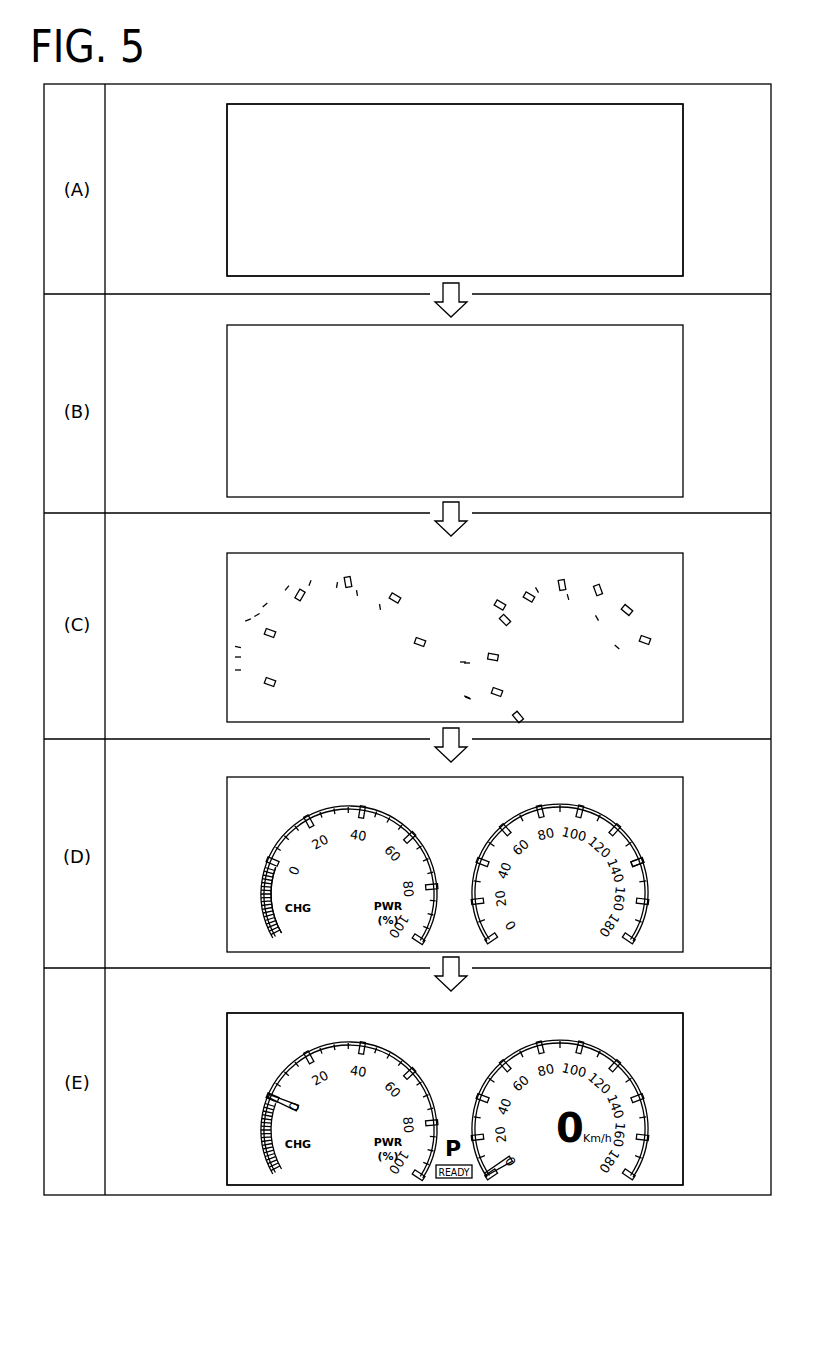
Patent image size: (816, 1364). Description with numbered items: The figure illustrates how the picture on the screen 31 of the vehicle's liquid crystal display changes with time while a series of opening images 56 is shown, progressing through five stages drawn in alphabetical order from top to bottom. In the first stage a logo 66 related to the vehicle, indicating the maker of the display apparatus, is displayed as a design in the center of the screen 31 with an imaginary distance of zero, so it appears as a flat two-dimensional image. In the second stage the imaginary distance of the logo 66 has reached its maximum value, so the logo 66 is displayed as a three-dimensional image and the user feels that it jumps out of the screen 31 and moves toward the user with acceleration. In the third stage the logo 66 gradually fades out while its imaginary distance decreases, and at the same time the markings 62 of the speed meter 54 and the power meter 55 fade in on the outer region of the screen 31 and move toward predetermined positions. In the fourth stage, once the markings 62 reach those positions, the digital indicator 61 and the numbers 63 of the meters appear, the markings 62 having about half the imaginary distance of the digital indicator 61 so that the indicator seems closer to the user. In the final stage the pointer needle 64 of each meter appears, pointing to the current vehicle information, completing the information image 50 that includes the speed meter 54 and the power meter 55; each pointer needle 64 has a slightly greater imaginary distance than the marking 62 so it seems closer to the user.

The screen 31 is at (654, 150).
The information image 50 is at (646, 1029).
The speed meter 54 is at (486, 576).
The power meter 55 is at (395, 574).
The opening image 56 is at (651, 117).
The digital indicator 61 is at (578, 919).
The marking 62 is at (263, 683).
The number 63 is at (267, 880).
The pointer needle 64 is at (268, 1112).
The logo 66 is at (343, 186).